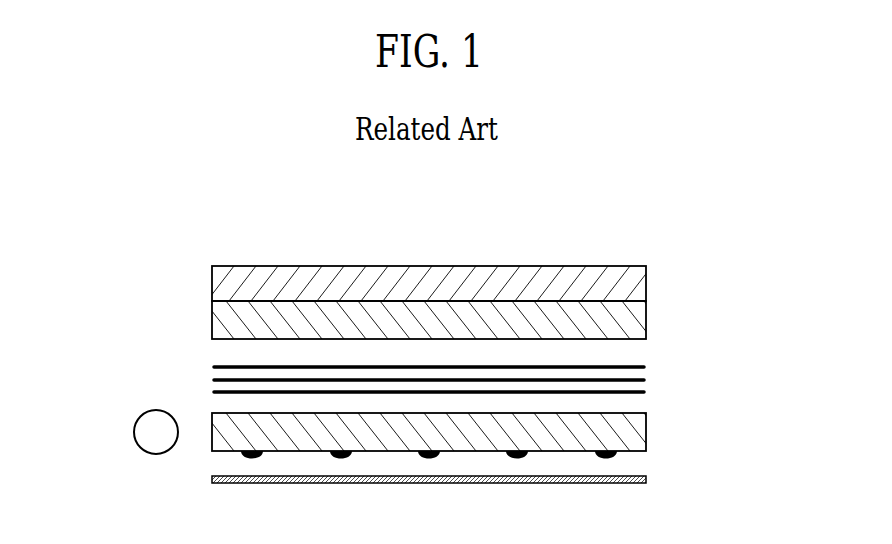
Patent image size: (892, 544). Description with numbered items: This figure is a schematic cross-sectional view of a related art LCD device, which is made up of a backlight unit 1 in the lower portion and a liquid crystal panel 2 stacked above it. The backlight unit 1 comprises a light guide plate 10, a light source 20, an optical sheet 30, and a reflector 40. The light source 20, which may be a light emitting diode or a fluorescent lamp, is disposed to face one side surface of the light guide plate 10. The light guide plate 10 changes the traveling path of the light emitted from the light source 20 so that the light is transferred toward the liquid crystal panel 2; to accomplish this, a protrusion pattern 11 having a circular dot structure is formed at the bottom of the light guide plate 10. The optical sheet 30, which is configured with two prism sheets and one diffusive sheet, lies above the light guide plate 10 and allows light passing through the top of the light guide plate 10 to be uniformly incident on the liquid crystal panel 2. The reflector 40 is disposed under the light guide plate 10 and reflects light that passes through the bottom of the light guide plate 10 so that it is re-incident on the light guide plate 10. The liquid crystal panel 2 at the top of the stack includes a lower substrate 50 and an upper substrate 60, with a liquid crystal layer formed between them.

The backlight unit 1 is at (735, 367).
The liquid crystal panel 2 is at (735, 265).
The light guide plate 10 is at (646, 432).
The protrusion pattern 11 is at (234, 453).
The light source 20 is at (134, 433).
The optical sheet 30 is at (680, 367).
The reflector 40 is at (646, 478).
The lower substrate 50 is at (646, 323).
The upper substrate 60 is at (646, 281).